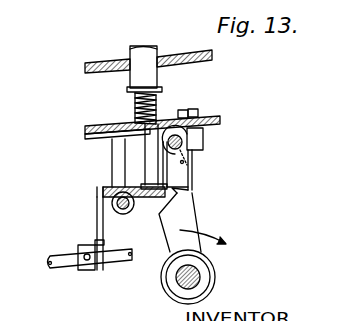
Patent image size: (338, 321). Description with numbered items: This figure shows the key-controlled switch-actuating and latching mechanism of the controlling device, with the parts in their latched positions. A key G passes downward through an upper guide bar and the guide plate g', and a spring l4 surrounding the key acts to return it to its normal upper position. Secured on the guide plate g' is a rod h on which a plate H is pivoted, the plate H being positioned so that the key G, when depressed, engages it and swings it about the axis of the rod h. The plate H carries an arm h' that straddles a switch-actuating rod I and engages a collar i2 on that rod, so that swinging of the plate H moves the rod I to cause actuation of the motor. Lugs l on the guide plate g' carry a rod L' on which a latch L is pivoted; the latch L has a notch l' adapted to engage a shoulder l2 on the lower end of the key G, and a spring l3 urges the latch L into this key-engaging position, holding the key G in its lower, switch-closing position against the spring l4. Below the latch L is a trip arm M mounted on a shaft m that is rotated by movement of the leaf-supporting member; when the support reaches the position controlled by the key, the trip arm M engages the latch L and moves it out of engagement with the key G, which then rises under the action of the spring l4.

The key G is at (143, 55).
The upper support bar g is at (148, 49).
The spring l4 is at (162, 103).
The guide plate g' is at (161, 113).
The lug l is at (202, 154).
The shoulder l2 is at (146, 181).
The spring l3 is at (193, 164).
The rod L' is at (228, 162).
The latch L is at (214, 175).
The notch l' is at (199, 201).
The trip arm M is at (167, 245).
The shaft m is at (200, 278).
The plate H is at (134, 212).
The rod h is at (102, 200).
The arm h' is at (84, 228).
The switch-actuating rod I is at (65, 265).
The collar i2 is at (87, 272).